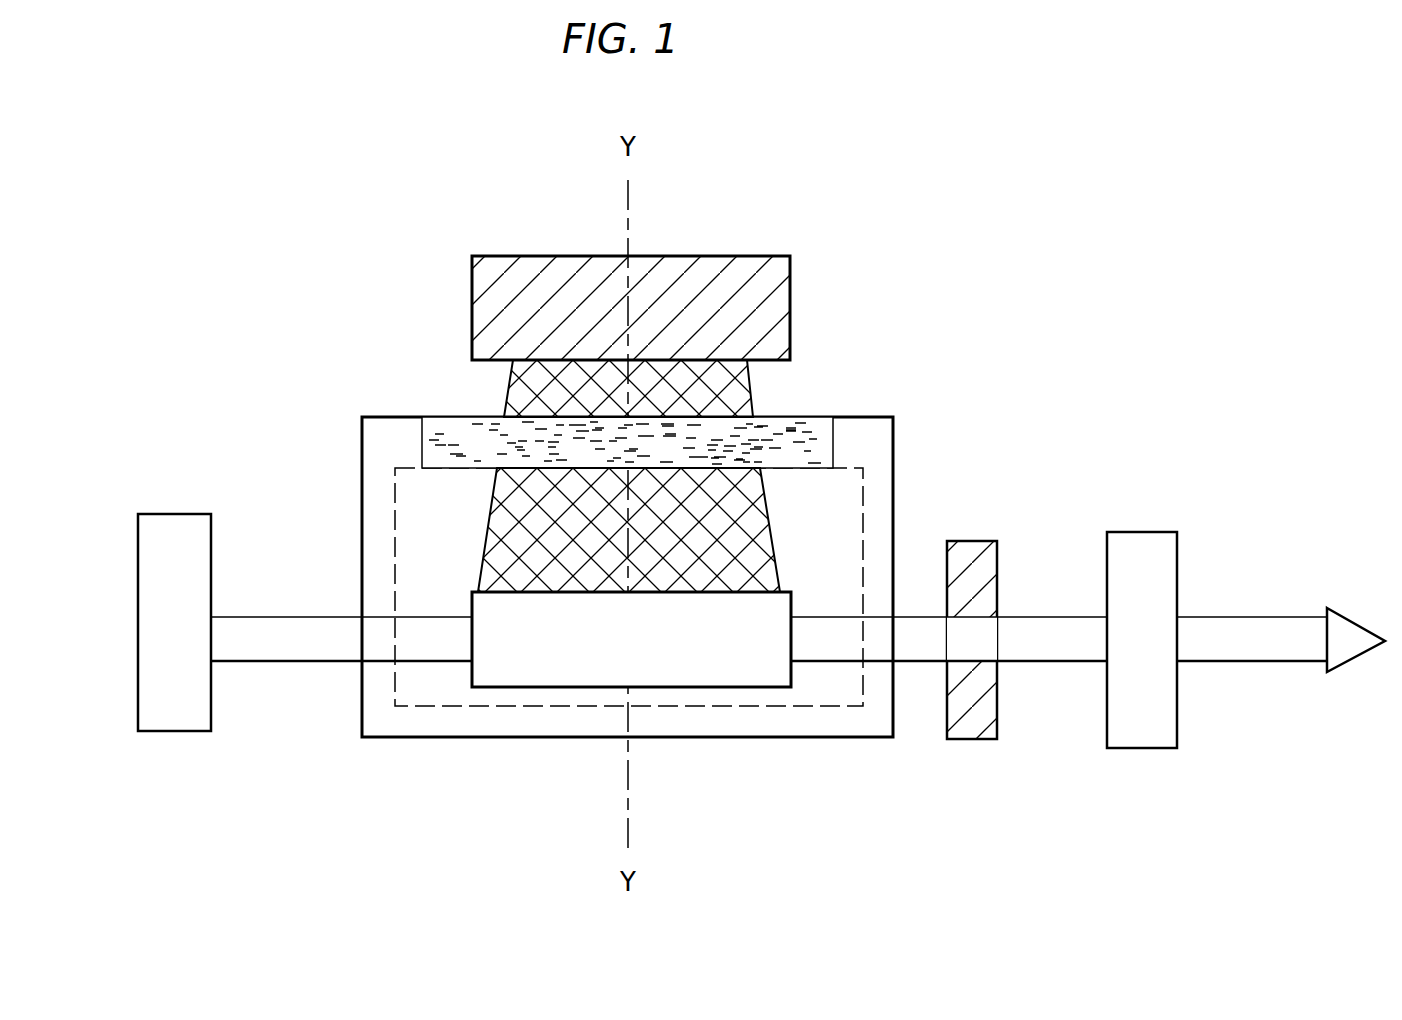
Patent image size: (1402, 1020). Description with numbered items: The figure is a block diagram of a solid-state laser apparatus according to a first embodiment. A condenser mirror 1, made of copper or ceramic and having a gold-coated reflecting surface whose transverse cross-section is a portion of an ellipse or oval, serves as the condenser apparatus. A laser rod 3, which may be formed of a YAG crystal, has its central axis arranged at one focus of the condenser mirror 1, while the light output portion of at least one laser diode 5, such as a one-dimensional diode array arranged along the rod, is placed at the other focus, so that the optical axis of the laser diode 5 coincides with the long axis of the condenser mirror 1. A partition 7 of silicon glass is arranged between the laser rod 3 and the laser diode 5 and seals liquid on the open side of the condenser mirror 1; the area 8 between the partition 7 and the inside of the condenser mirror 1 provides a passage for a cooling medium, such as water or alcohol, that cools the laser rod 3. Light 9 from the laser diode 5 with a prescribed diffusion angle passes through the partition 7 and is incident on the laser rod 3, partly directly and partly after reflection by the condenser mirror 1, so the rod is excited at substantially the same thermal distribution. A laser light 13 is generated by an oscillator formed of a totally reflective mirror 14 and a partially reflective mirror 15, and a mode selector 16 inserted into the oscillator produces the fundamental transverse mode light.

The condenser mirror 1 is at (728, 737).
The laser rod 3 is at (542, 670).
The laser diode 5 is at (472, 302).
The partition 7 is at (793, 428).
The area 8 is at (840, 517).
The light 9 is at (485, 538).
The laser light 13 is at (1275, 640).
The totally reflective mirror 14 is at (138, 688).
The partially reflective mirror 15 is at (1105, 724).
The mode selector 16 is at (945, 722).